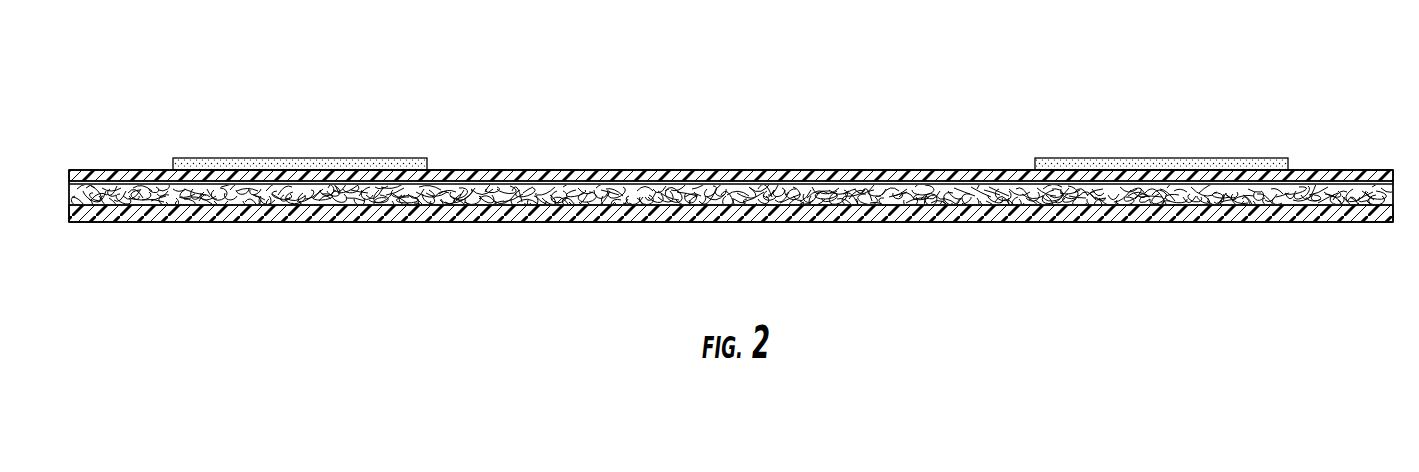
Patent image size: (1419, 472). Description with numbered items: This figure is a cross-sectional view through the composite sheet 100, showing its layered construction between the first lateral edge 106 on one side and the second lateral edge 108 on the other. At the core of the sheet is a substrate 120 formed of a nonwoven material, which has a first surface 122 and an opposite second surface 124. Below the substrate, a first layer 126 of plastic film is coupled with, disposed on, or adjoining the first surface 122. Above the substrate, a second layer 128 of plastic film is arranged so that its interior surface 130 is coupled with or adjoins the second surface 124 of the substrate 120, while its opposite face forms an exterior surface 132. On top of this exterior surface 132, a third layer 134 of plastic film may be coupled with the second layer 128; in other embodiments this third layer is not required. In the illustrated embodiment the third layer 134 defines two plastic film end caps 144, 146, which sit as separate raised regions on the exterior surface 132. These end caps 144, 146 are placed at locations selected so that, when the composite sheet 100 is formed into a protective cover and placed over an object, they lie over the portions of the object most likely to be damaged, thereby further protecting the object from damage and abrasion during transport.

The composite sheet 100 is at (962, 53).
The first lateral edge 106 is at (57, 178).
The second lateral edge 108 is at (1405, 170).
The substrate 120 is at (598, 192).
The first surface 122 is at (642, 208).
The second surface 124 is at (670, 180).
The first layer 126 is at (783, 223).
The second layer 128 is at (810, 180).
The interior surface 130 is at (880, 210).
The exterior surface 132 is at (898, 172).
The third layer 134 is at (378, 123).
The end cap 144 is at (230, 158).
The end cap 146 is at (1100, 157).